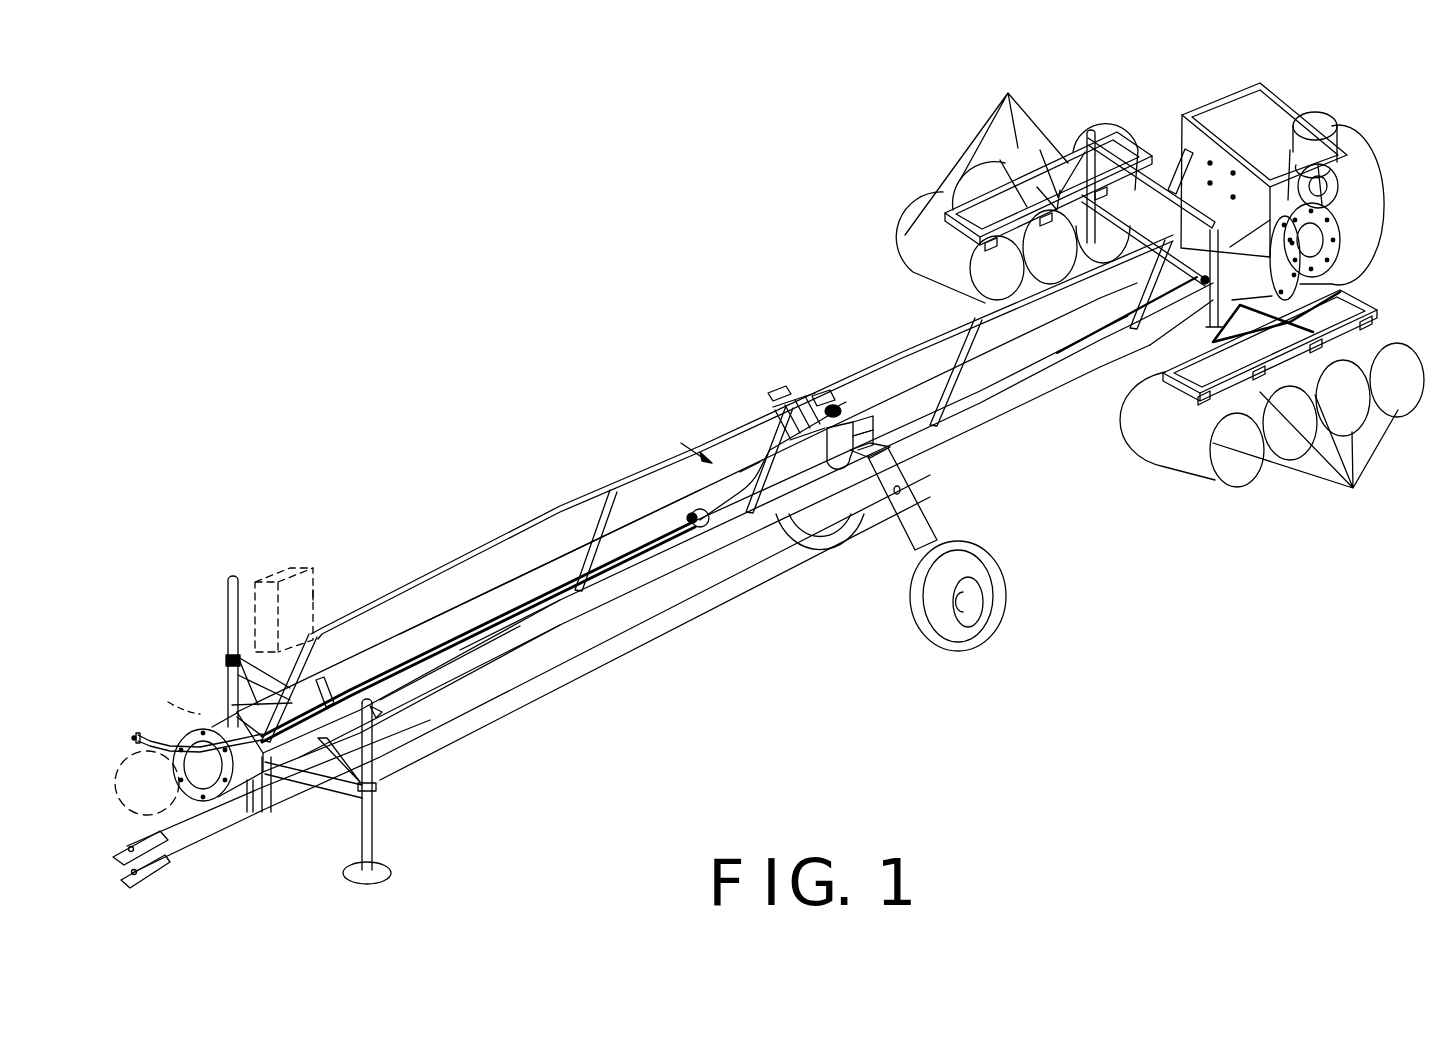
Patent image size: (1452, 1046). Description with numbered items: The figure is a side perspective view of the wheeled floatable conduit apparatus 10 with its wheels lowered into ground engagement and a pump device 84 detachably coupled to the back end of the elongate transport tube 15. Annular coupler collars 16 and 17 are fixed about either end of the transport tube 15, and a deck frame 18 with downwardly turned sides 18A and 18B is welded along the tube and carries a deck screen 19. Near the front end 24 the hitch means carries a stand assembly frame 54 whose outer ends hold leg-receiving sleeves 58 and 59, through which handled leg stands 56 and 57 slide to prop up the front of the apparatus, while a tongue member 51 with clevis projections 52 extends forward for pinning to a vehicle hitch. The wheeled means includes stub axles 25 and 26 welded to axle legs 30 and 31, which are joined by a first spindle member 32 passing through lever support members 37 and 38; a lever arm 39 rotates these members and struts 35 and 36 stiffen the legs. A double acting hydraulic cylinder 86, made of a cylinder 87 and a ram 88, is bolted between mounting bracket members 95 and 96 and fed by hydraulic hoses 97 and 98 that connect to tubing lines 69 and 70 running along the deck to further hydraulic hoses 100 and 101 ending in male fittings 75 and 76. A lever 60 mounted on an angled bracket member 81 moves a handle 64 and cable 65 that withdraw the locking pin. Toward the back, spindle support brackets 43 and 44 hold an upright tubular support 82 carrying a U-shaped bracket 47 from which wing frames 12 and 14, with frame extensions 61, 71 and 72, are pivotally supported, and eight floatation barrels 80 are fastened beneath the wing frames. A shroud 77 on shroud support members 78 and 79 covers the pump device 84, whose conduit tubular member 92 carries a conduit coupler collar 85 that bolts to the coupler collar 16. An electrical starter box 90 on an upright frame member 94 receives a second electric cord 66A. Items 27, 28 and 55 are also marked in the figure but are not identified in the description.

The wheeled floatable conduit apparatus 10 is at (618, 358).
The wing frame 12 is at (1353, 322).
The wing frame 14 is at (951, 232).
The elongate transport tube 15 is at (531, 634).
The annular coupler collar 16 is at (1345, 292).
The annular coupler collar 17 is at (203, 737).
The deck frame 18 is at (420, 680).
The downwardly turned side 18A is at (440, 660).
The downwardly turned side 18B is at (237, 717).
The deck screen 19 is at (495, 590).
The front end 24 is at (180, 806).
The stub axle 25 is at (958, 612).
The stub axle 26 is at (813, 512).
The tire 27 is at (990, 637).
The wheel 28 is at (833, 538).
The axle leg 30 is at (923, 523).
The axle leg 31 is at (777, 394).
The first spindle member 32 is at (893, 468).
The strut 35 is at (878, 442).
The strut 36 is at (816, 398).
The lever support member 37 is at (862, 426).
The lever support member 38 is at (831, 404).
The lever arm 39 is at (849, 420).
The spindle support bracket 43 is at (1157, 330).
The spindle support bracket 44 is at (1090, 296).
The U-shaped bracket 47 is at (1219, 284).
The tongue member 51 is at (203, 846).
The clevis projections 52 is at (118, 858).
The stand assembly frame 54 is at (333, 788).
The bracket 55 is at (228, 657).
The handled leg stand 56 is at (375, 826).
The handled leg stand 57 is at (228, 590).
The leg-receiving sleeve 58 is at (378, 787).
The leg-receiving sleeve 59 is at (230, 670).
The lever 60 is at (320, 678).
The frame extension 61 is at (1281, 344).
The movable handle 64 is at (378, 712).
The cable 65 is at (509, 625).
The second electric cord 66A is at (172, 698).
The tubing line 69 is at (473, 620).
The tubing line 70 is at (437, 637).
The frame extension 71 is at (1053, 195).
The frame extension 72 is at (1018, 147).
The male fitting 75 is at (136, 737).
The male fitting 76 is at (132, 739).
The shroud 77 is at (1207, 108).
The shroud support member 78 is at (1262, 236).
The shroud support member 79 is at (1177, 152).
The floatation barrel 80 is at (1151, 285).
The angled bracket member 81 is at (360, 748).
The upright tubular support 82 is at (1178, 323).
The pump device 84 is at (1337, 122).
The conduit coupler collar 85 is at (1332, 226).
The double acting hydraulic cylinder 86 is at (687, 442).
The cylinder 87 is at (738, 470).
The ram 88 is at (787, 427).
The electrical starter box 90 is at (262, 567).
The conduit tubular member 92 is at (1354, 240).
The upright frame member 94 is at (318, 598).
The hydraulic mounting bracket member 95 is at (839, 408).
The hydraulic mounting bracket member 96 is at (692, 516).
The hydraulic hose 97 is at (702, 496).
The hydraulic hose 98 is at (748, 514).
The hydraulic hose 100 is at (160, 737).
The hydraulic hose 101 is at (145, 783).